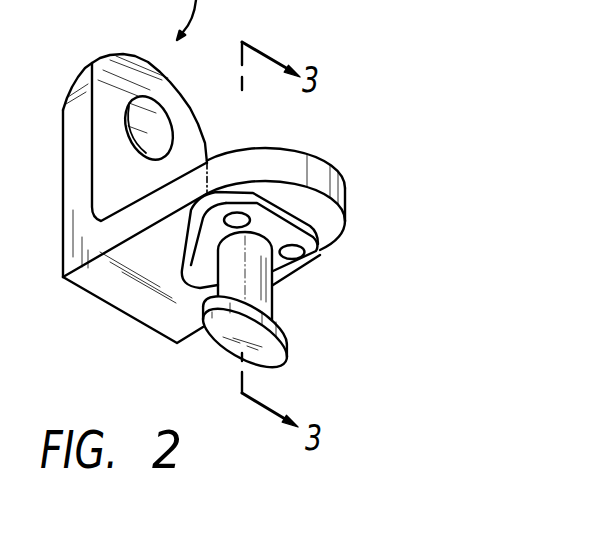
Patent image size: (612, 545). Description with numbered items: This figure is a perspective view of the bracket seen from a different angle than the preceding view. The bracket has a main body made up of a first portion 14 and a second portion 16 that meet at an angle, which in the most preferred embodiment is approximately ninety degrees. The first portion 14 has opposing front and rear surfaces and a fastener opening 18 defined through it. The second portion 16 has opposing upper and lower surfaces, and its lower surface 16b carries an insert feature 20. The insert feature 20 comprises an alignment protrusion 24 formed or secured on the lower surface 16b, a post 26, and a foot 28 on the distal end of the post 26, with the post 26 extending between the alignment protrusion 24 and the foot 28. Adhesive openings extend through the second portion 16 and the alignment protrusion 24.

The first portion 14 is at (118, 62).
The second portion 16 is at (320, 172).
The lower surface 16b is at (97, 278).
The fastener opening 18 is at (148, 117).
The insert feature 20 is at (186, 357).
The alignment protrusion 24 is at (298, 218).
The post 26 is at (258, 277).
The foot 28 is at (278, 357).